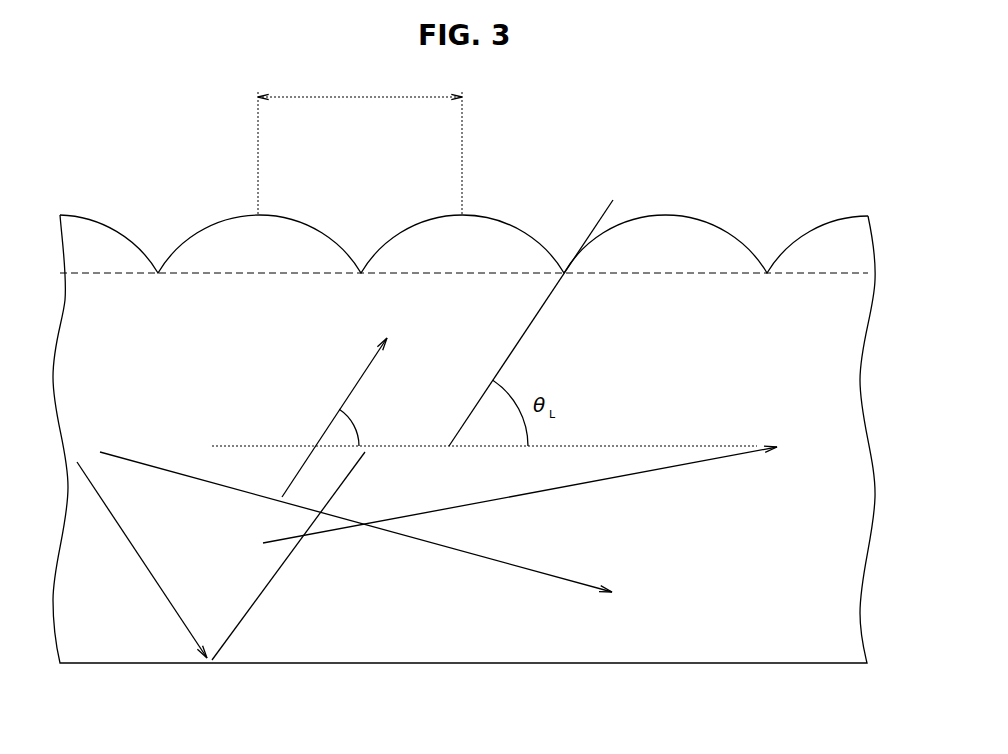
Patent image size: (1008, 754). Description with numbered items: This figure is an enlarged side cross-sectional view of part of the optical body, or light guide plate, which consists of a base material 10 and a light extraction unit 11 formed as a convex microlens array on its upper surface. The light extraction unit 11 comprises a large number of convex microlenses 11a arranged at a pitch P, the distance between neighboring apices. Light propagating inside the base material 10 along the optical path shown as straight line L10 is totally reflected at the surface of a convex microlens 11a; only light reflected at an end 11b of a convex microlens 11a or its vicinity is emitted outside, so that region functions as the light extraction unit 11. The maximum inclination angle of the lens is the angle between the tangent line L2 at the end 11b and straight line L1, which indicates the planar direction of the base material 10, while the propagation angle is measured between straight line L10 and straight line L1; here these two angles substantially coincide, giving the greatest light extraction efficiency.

The base material 10 is at (446, 647).
The light extraction unit 11 is at (464, 194).
The convex microlens 11a is at (281, 232).
The end of the convex microlens 11b is at (564, 271).
The pitch P is at (360, 142).
The straight line L1 is at (685, 446).
The tangent line L2 is at (521, 330).
The straight line L10 (optical path of internally propagating light) L10 is at (358, 377).